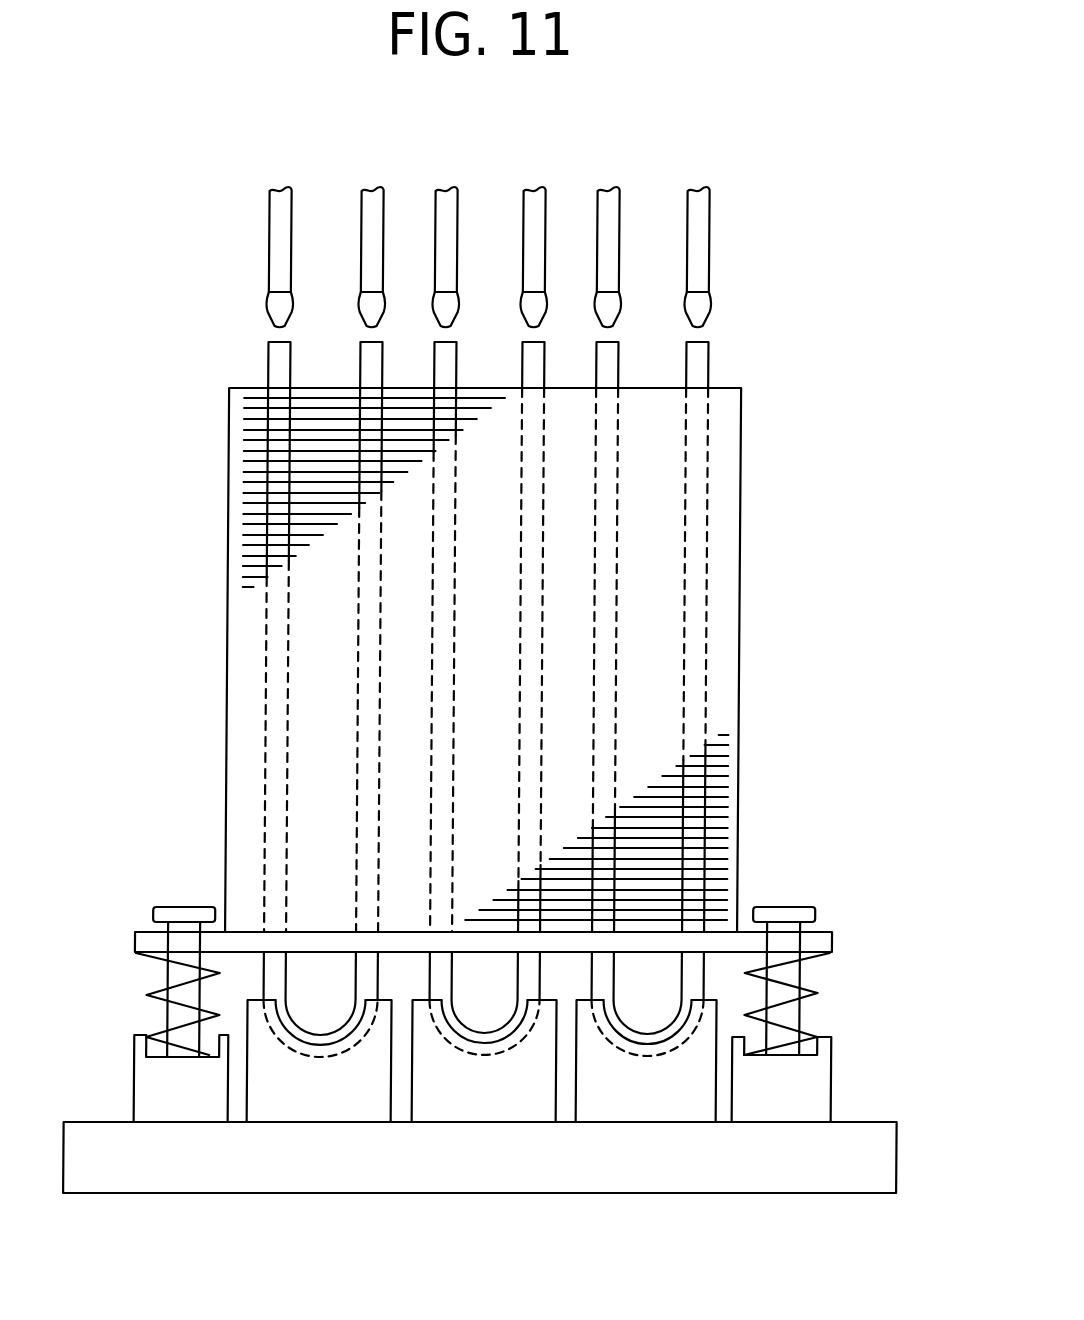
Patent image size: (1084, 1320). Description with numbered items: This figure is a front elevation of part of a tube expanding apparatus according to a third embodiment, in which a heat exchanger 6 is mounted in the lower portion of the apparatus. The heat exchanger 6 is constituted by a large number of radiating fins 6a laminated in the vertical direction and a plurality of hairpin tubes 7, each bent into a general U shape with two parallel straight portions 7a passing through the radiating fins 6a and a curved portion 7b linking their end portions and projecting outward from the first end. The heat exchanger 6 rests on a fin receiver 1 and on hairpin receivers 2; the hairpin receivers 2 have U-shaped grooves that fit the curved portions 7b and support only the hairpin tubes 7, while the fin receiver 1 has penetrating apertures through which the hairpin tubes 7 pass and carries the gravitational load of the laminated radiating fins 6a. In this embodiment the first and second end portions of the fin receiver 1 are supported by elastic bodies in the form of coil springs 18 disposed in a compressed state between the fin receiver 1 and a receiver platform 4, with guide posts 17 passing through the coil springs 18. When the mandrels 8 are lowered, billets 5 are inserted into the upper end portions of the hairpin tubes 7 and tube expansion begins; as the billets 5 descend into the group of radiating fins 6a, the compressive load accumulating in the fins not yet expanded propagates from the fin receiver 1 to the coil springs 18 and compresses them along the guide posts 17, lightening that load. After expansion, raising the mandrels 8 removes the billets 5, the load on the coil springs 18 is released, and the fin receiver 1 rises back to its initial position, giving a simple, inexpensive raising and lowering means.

The fin receiver 1 is at (832, 940).
The hairpin receivers 2 is at (685, 1085).
The receiver platform 4 is at (898, 1152).
The billets 5 is at (704, 300).
The heat exchanger 6 is at (737, 493).
The radiating fins 6a is at (726, 803).
The hairpin tubes 7 is at (704, 352).
The straight portions 7a is at (262, 644).
The curved portion 7b is at (322, 1055).
The mandrels 8 is at (704, 228).
The guide posts 17 is at (785, 907).
The coil springs 18 is at (820, 993).